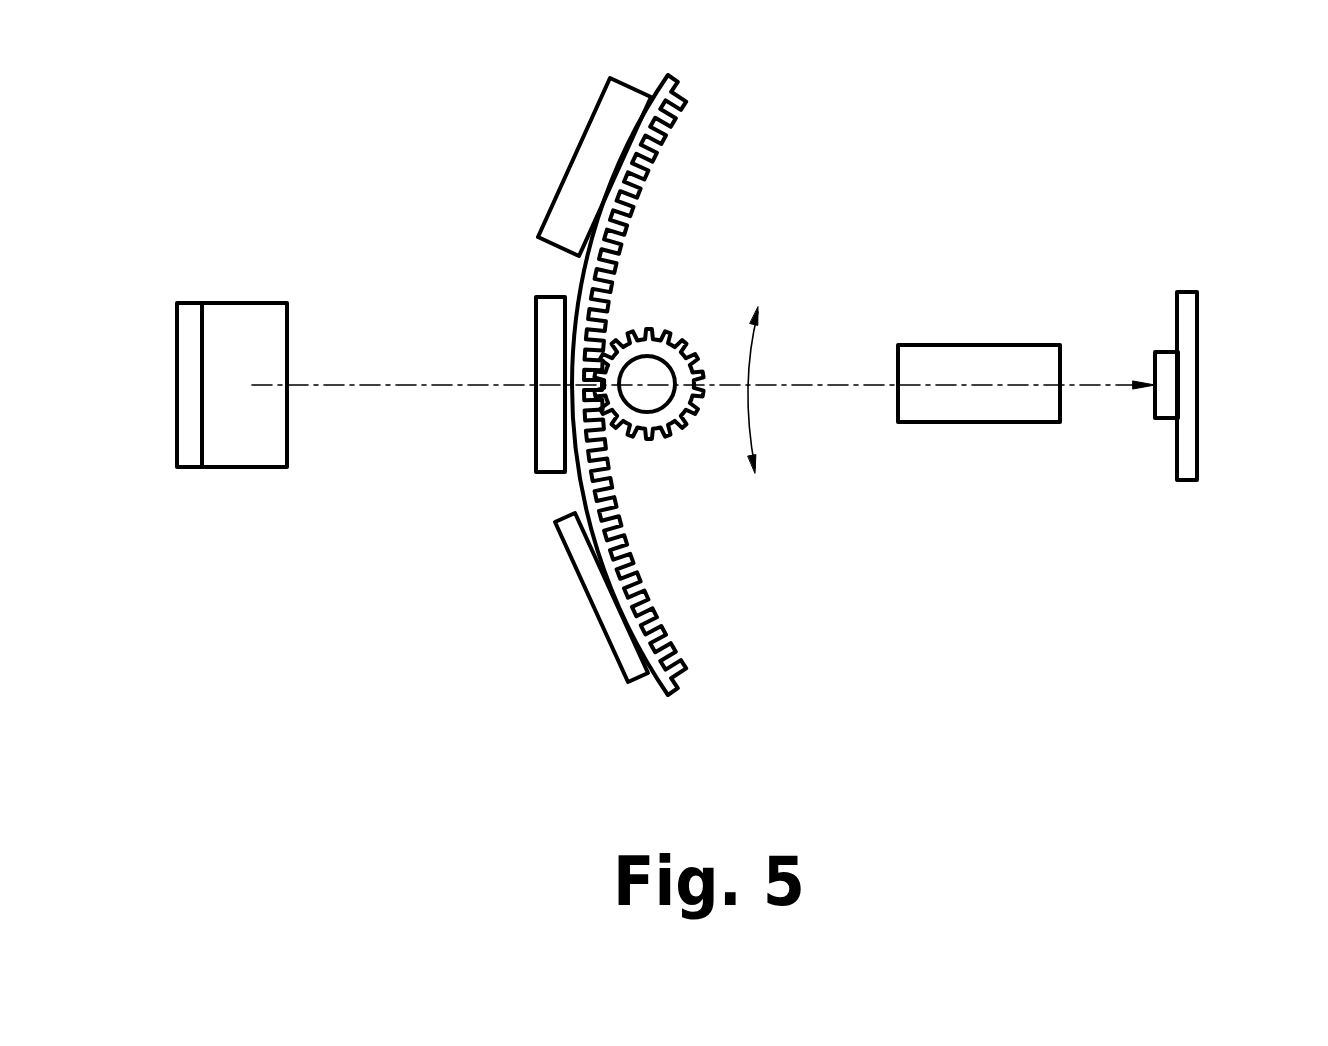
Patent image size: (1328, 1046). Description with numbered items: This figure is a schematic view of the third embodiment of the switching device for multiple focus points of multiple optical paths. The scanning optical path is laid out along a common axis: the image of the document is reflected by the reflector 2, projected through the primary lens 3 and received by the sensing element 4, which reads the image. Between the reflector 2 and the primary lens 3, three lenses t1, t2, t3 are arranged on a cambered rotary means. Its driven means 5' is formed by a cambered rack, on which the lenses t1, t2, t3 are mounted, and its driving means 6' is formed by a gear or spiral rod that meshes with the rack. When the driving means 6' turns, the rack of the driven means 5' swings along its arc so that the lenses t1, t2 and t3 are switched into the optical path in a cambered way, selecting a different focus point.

The reflector 2 is at (240, 448).
The primary lens 3 is at (965, 362).
The sensing element 4 is at (1187, 377).
The driven means 5' is at (697, 377).
The driving means 6' is at (677, 321).
The lens t1 is at (600, 583).
The lens t2 is at (548, 357).
The lens t3 is at (582, 183).